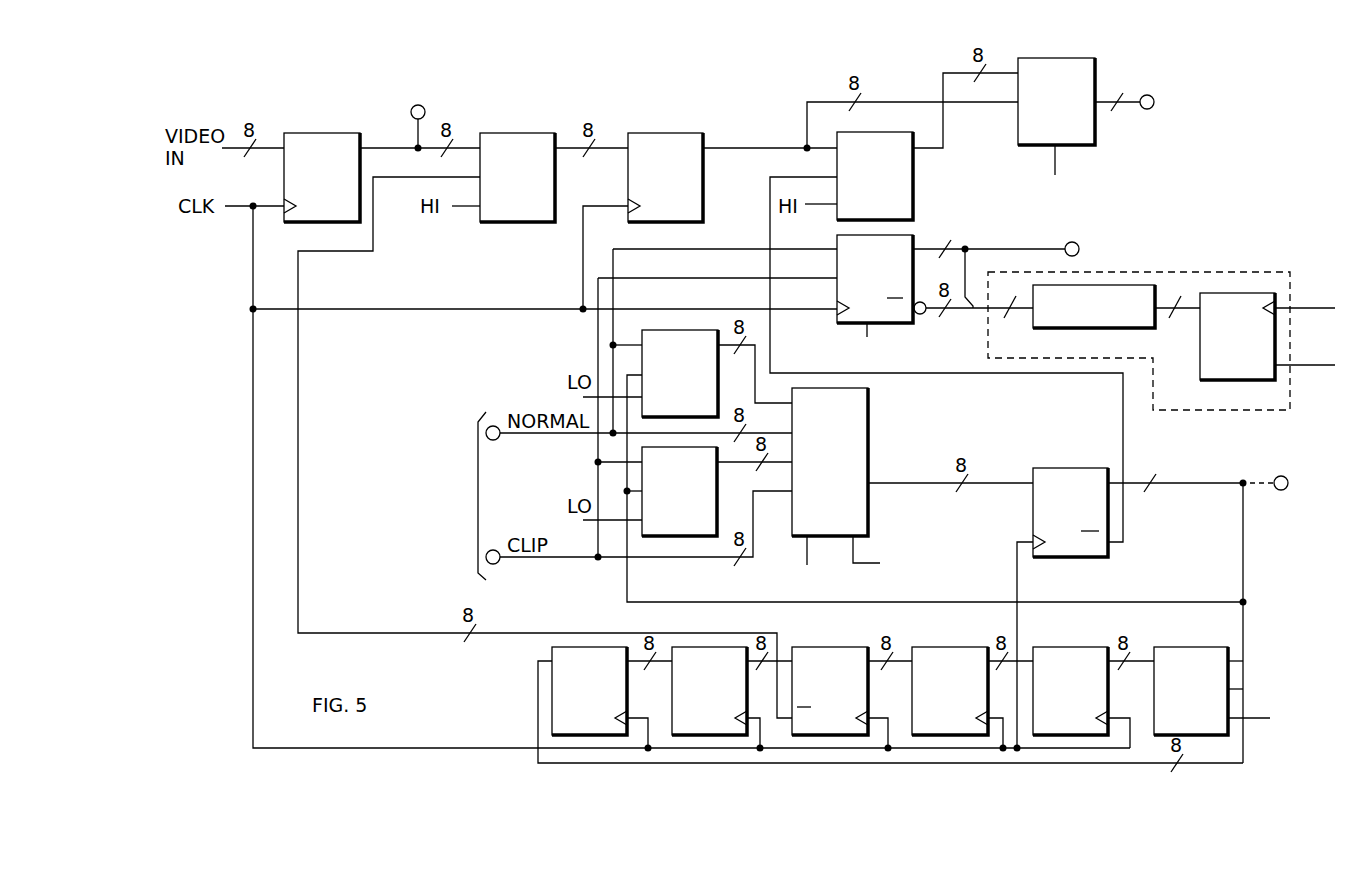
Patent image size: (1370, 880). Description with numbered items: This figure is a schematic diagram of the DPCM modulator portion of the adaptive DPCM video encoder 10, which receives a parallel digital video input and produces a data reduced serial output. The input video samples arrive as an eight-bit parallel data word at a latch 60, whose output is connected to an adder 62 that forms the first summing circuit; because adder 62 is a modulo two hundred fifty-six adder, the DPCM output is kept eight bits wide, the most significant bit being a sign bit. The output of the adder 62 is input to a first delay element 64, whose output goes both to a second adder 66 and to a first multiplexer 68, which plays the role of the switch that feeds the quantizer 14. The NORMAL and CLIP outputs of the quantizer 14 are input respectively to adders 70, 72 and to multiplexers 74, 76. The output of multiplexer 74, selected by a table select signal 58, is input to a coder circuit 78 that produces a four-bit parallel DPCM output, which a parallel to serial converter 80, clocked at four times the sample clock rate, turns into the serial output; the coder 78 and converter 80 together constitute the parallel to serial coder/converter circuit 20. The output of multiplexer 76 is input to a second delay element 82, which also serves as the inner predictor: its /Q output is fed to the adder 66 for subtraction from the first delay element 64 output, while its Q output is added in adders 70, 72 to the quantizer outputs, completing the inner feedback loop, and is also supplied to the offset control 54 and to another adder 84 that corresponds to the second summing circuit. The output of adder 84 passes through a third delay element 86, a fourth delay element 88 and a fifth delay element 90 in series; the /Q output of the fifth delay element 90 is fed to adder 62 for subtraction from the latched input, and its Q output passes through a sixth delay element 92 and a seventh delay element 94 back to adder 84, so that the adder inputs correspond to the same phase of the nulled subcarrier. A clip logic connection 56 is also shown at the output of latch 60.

The adaptive DPCM video encoder 10 is at (1225, 67).
The quantizer 14 is at (831, 326).
The parallel to serial coder/converter circuit 20 is at (1167, 412).
The offset control circuit 54 is at (1229, 509).
The clip logic 56 is at (451, 102).
The table select 58 is at (1086, 264).
The latch 60 is at (340, 133).
The adder 62 is at (503, 132).
The first delay element 64 is at (688, 133).
The second adder 66 is at (915, 158).
The first multiplexer 68 is at (1098, 72).
The adder 70 is at (712, 328).
The adder 72 is at (718, 473).
The multiplexer 74 is at (848, 323).
The multiplexer 76 is at (868, 455).
The coder circuit 78 is at (1140, 330).
The parallel to serial converter 80 is at (1220, 382).
The second delay element 82 is at (1080, 557).
The adder 84 is at (1210, 647).
The third delay element 86 is at (1088, 647).
The fourth delay element 88 is at (968, 647).
The fifth delay element 90 is at (848, 647).
The sixth delay element 92 is at (740, 647).
The seventh delay element 94 is at (608, 647).